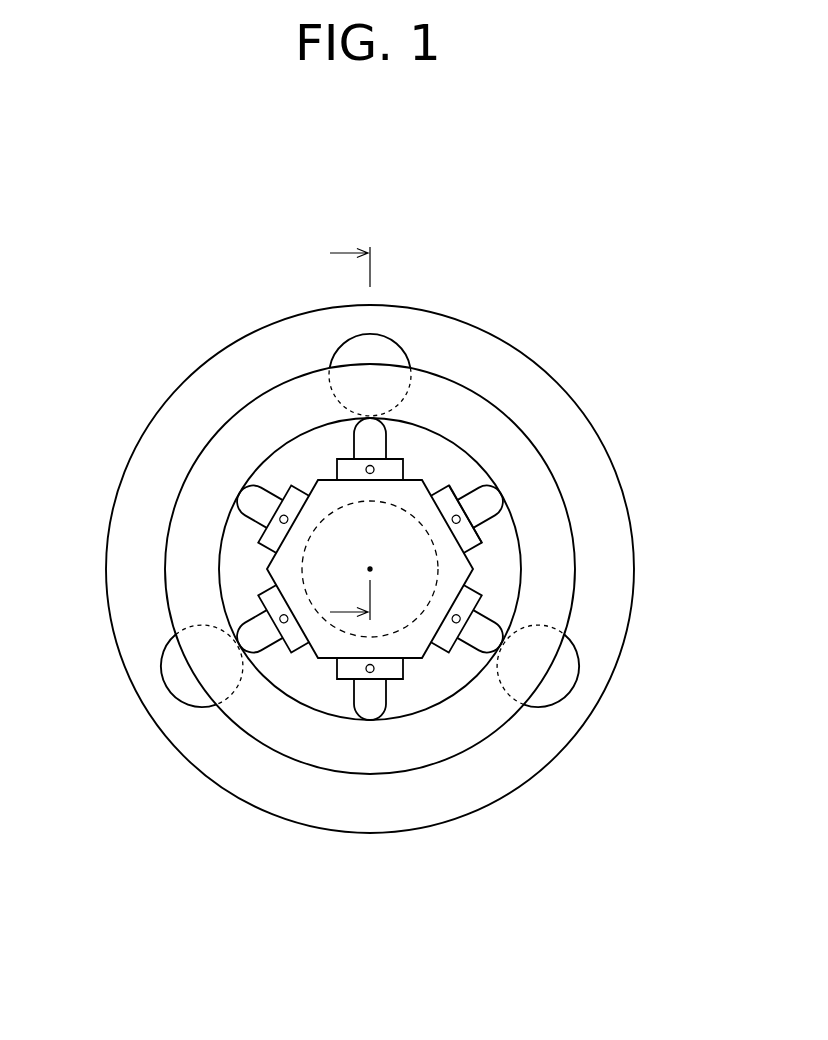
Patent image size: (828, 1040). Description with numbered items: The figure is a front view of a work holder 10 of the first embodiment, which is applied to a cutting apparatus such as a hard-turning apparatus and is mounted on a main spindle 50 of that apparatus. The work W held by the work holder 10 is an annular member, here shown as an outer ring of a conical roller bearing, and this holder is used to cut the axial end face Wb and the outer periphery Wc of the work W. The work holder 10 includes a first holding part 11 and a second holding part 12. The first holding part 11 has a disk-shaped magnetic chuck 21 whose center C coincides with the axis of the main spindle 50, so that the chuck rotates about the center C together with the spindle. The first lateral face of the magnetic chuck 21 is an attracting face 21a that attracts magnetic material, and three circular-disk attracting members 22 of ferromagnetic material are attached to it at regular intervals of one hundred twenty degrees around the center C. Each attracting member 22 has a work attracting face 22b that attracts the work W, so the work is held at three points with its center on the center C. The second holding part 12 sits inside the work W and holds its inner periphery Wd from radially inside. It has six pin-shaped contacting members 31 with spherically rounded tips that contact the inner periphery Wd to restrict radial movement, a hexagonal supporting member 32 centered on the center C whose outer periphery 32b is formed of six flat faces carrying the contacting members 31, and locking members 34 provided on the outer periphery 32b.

The work holder 10 is at (565, 248).
The first holding part 11 is at (182, 368).
The second holding part 12 is at (282, 482).
The magnetic chuck 21 is at (447, 313).
The attracting face 21a is at (535, 395).
The attracting member 22 is at (388, 337).
The work attracting face 22b is at (353, 353).
The contacting member 31 is at (373, 443).
The supporting member 32 is at (264, 560).
The outer periphery 32b is at (433, 487).
The locking member 34 is at (297, 487).
The main spindle 50 is at (422, 657).
The work W is at (553, 468).
The axial end face Wb is at (552, 532).
The outer periphery Wc is at (573, 608).
The inner periphery Wd is at (345, 708).
The center C is at (372, 566).